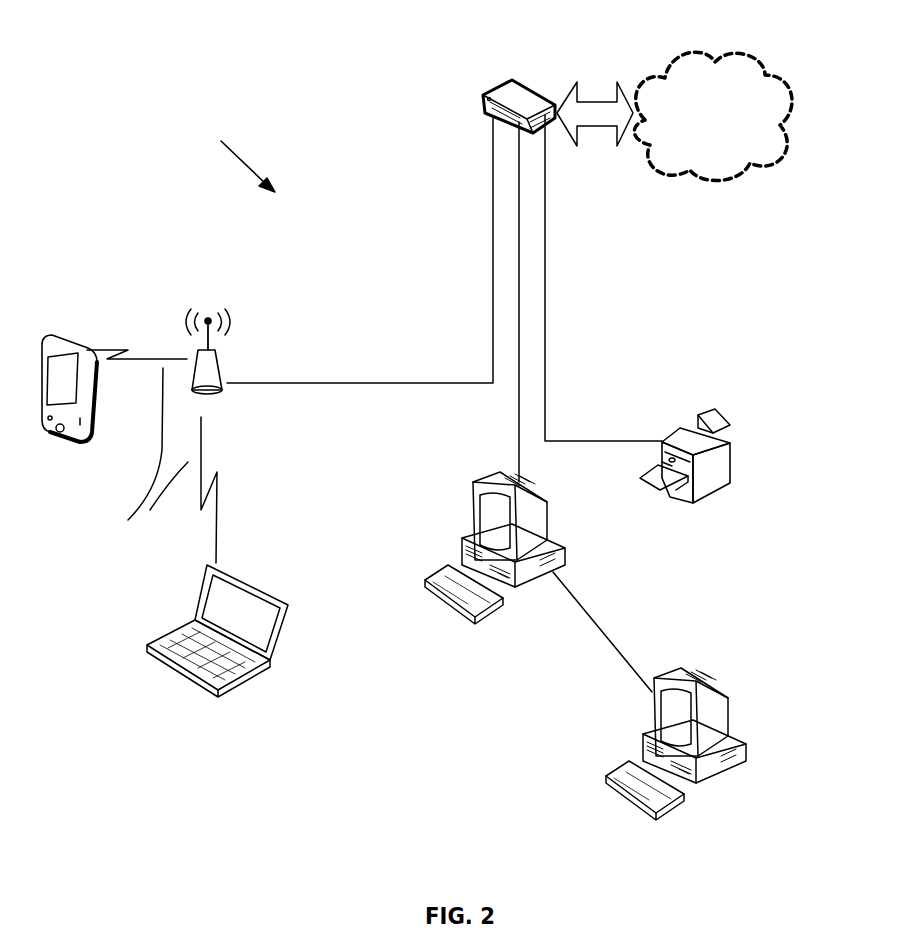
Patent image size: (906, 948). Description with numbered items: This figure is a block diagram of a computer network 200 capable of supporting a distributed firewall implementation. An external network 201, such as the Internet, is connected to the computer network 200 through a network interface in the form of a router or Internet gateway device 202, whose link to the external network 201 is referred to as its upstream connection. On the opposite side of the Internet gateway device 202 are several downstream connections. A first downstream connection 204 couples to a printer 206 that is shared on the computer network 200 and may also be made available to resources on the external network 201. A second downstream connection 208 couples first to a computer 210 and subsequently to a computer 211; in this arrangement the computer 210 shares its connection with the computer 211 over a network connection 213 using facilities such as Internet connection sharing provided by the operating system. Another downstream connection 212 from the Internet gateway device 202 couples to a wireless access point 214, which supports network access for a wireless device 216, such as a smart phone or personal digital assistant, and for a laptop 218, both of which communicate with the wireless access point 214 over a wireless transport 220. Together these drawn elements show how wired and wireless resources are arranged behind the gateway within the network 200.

The computer network 200 is at (226, 149).
The external network 201 is at (703, 190).
The Internet gateway device 202 is at (483, 93).
The first downstream connection 204 is at (545, 393).
The printer 206 is at (733, 455).
The second downstream connection 208 is at (519, 320).
The computer 210 is at (472, 532).
The computer 211 is at (738, 698).
The downstream connection 212 is at (493, 350).
The network connection 213 is at (600, 642).
The wireless access point 214 is at (227, 355).
The wireless device 216 is at (67, 343).
The laptop 218 is at (238, 690).
The wireless transport 220 is at (152, 456).